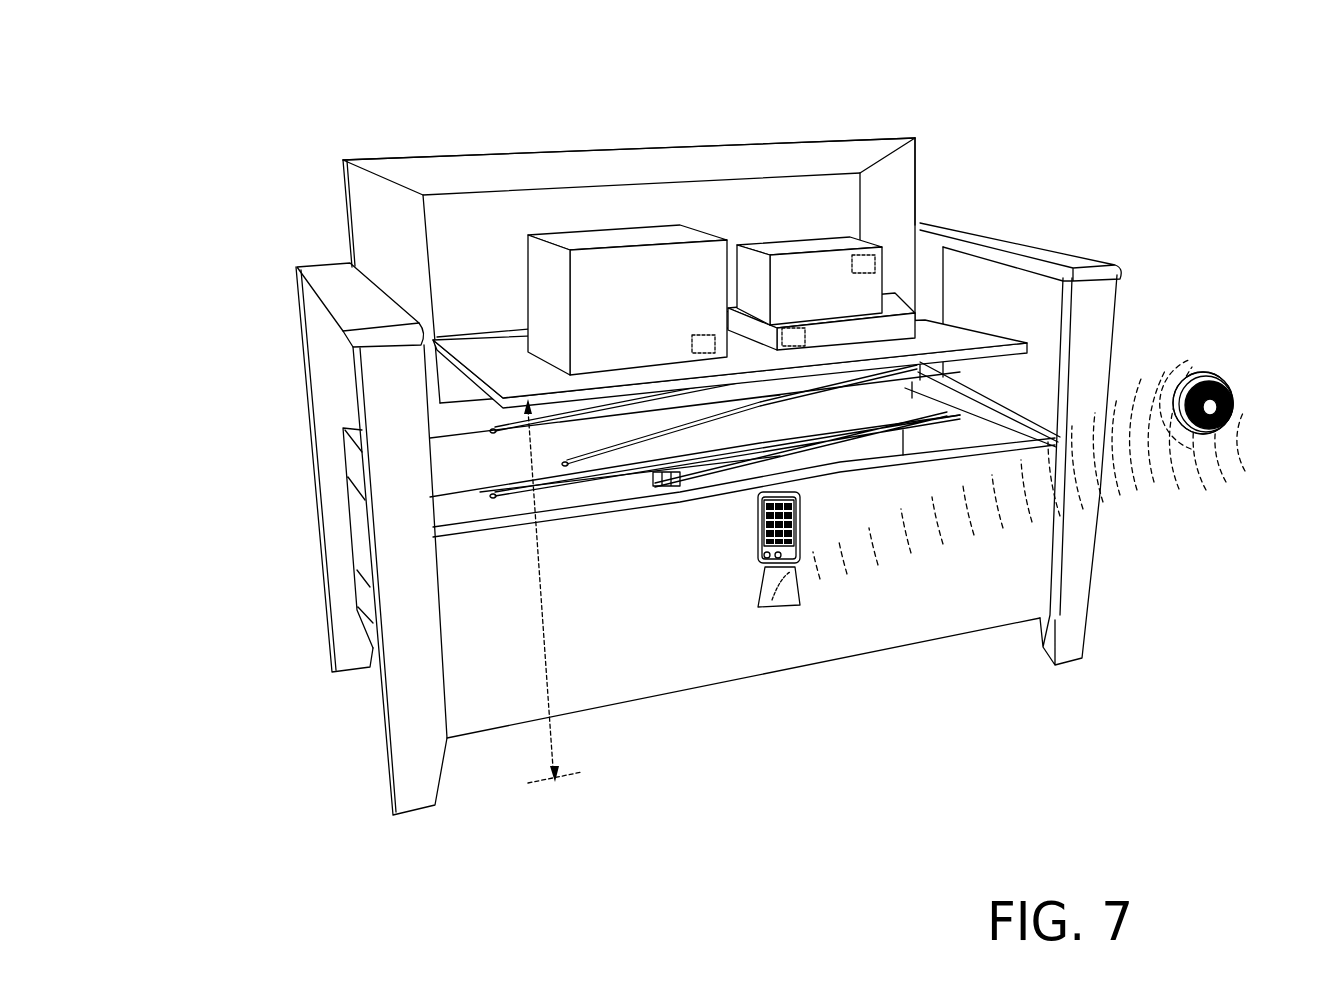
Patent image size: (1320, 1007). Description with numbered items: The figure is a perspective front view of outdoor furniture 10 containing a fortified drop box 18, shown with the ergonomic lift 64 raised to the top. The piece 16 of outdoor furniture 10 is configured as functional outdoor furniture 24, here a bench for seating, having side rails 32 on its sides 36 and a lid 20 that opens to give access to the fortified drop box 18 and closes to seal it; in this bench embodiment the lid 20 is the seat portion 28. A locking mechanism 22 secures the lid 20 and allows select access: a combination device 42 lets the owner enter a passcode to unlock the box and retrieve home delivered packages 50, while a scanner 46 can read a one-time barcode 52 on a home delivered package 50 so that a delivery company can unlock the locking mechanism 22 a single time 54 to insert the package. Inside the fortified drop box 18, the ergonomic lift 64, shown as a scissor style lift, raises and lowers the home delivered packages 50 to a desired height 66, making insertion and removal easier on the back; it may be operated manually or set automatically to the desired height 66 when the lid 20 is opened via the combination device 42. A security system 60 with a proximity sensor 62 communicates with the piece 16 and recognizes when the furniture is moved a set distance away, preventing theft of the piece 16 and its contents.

The outdoor furniture 10 is at (355, 55).
The piece of outdoor furniture 16 is at (578, 78).
The fortified drop box 18 is at (447, 264).
The lid 20 is at (457, 170).
The locking mechanism 22 is at (724, 542).
The functional outdoor furniture 24 is at (951, 93).
The seat portion 28 is at (755, 113).
The side rails 32 is at (1045, 250).
The sides 36 is at (1163, 337).
The combination device 42 is at (800, 520).
The scanner 46 is at (795, 590).
The home delivered packages 50 is at (652, 228).
The one-time barcode 52 is at (692, 338).
The single time 54 is at (273, 215).
The security system 60 is at (1155, 256).
The proximity sensor 62 is at (1229, 378).
The ergonomic lift 64 is at (434, 450).
The desired height 66 is at (544, 613).